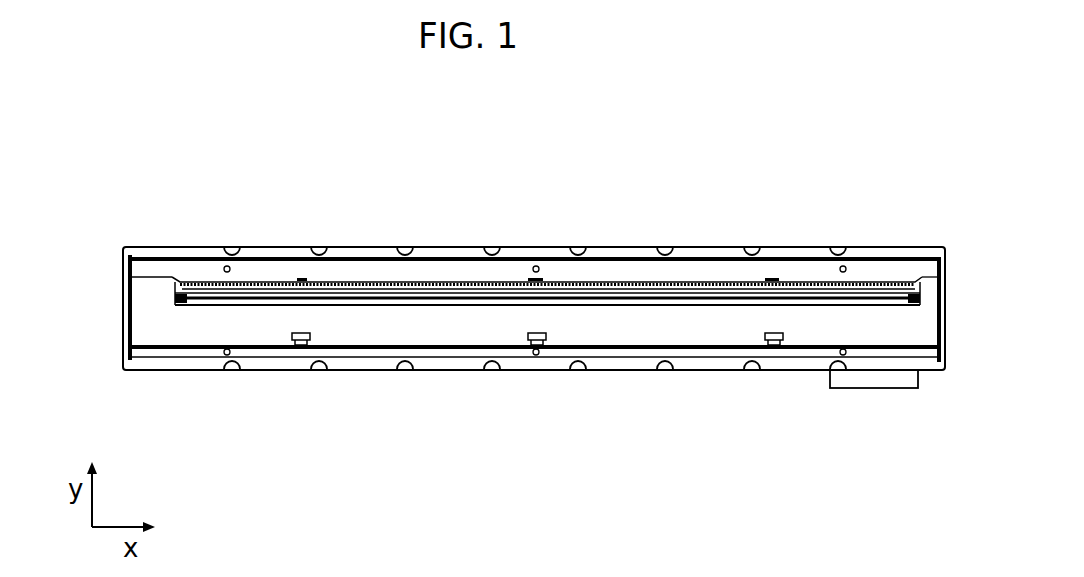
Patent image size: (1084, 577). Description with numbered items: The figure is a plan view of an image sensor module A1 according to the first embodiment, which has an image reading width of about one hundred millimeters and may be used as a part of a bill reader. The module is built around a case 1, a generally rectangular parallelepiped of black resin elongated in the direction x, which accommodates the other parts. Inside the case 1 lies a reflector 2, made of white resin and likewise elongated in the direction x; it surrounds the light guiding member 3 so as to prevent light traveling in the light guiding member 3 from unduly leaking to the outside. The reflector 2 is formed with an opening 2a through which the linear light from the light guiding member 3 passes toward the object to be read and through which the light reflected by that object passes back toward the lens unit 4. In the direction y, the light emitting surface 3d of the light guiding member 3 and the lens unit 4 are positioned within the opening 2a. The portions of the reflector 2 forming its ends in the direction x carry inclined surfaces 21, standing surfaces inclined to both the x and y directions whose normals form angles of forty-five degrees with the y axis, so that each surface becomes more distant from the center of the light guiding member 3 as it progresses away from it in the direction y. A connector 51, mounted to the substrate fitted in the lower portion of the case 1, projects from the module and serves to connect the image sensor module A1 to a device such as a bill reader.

The image sensor module A1 is at (136, 198).
The case 1 is at (140, 253).
The reflector 2 is at (148, 327).
The opening 2a is at (262, 304).
The light guiding member 3 is at (547, 247).
The light emitting surface 3d is at (432, 298).
The lens unit 4 is at (563, 282).
The inclined surface 21 is at (177, 280).
The connector 51 is at (892, 380).